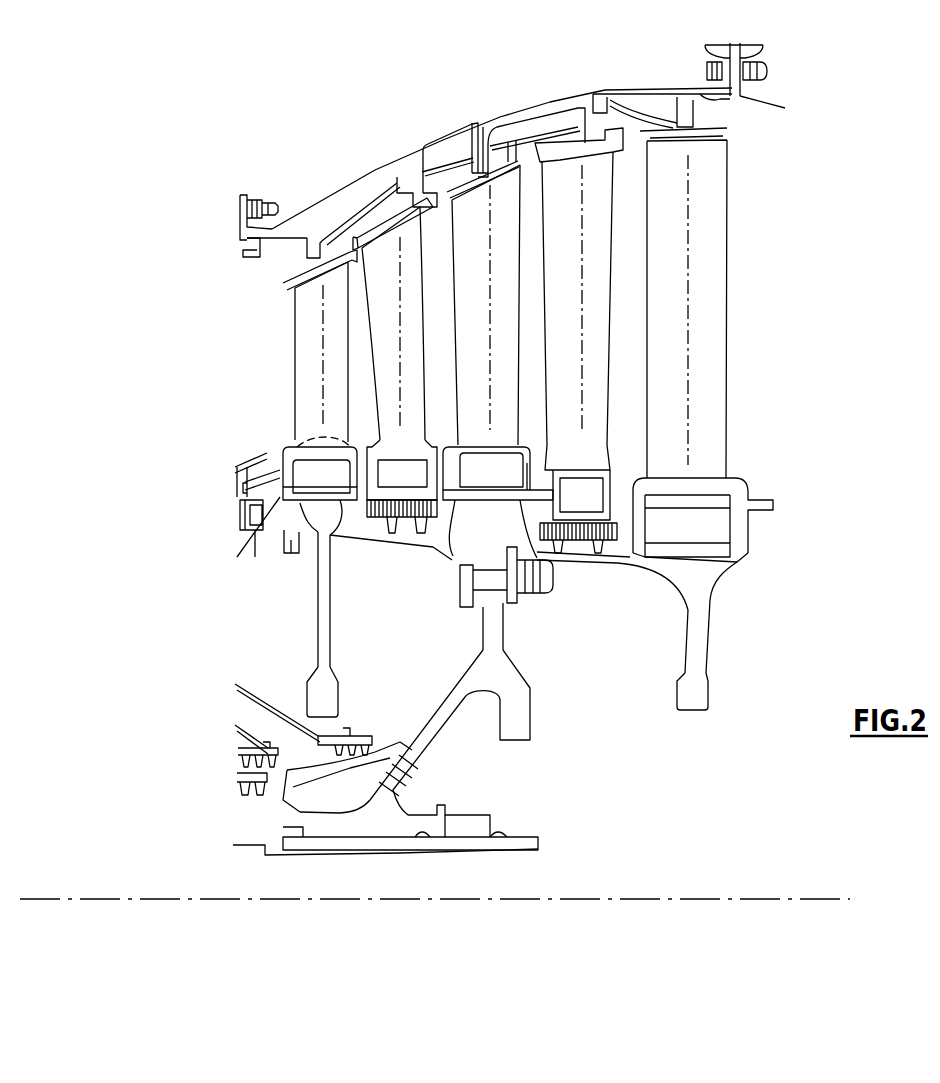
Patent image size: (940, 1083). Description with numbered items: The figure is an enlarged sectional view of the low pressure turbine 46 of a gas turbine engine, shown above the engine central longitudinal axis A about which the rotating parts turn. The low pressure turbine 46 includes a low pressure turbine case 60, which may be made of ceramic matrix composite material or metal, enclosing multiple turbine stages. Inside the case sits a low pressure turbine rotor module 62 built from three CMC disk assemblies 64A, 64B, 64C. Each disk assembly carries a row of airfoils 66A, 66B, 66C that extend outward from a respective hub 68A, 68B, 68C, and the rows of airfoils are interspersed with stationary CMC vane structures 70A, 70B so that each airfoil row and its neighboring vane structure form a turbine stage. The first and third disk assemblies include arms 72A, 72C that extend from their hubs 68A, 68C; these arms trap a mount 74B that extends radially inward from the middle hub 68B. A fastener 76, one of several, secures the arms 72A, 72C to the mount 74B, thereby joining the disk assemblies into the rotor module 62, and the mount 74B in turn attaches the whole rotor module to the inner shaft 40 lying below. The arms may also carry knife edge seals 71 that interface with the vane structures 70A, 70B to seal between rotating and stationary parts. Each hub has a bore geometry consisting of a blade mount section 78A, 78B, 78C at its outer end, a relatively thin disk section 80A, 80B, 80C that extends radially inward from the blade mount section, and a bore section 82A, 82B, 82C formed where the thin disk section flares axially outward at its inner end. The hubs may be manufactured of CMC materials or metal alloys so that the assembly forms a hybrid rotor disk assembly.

The inner shaft 40 is at (342, 848).
The low pressure turbine 46 is at (858, 88).
The low pressure turbine case 60 is at (375, 177).
The low pressure turbine rotor module 62 is at (807, 285).
The CMC disk assembly 64A is at (241, 608).
The CMC disk assembly 64B is at (447, 668).
The CMC disk assembly 64C is at (687, 647).
The airfoils 66A is at (341, 361).
The airfoils 66B is at (513, 327).
The airfoils 66C is at (709, 306).
The hub 68A is at (307, 560).
The hub 68B is at (450, 560).
The hub 68C is at (707, 583).
The CMC vane structure 70A is at (416, 291).
The CMC vane structure 70B is at (599, 294).
The knife edge seals 71 is at (600, 550).
The arm 72A is at (398, 550).
The arm 72C is at (620, 563).
The mount 74B is at (431, 736).
The fasteners 76 is at (462, 590).
The blade mount section 78A is at (255, 545).
The blade mount section 78B is at (545, 553).
The blade mount section 78C is at (738, 563).
The disk section 80A is at (313, 600).
The disk section 80B is at (495, 628).
The disk section 80C is at (700, 632).
The bore section 82A is at (294, 686).
The bore section 82B is at (521, 733).
The bore section 82C is at (700, 697).
The engine central longitudinal axis A is at (771, 899).